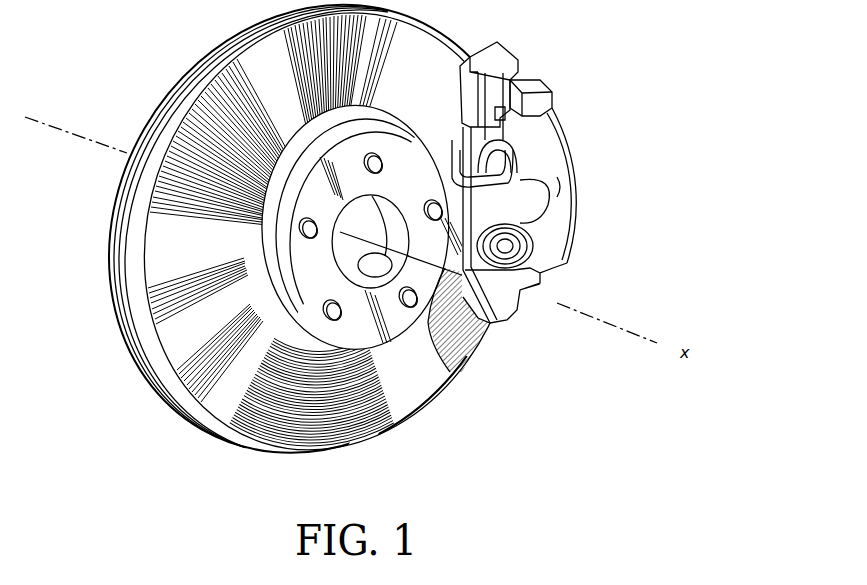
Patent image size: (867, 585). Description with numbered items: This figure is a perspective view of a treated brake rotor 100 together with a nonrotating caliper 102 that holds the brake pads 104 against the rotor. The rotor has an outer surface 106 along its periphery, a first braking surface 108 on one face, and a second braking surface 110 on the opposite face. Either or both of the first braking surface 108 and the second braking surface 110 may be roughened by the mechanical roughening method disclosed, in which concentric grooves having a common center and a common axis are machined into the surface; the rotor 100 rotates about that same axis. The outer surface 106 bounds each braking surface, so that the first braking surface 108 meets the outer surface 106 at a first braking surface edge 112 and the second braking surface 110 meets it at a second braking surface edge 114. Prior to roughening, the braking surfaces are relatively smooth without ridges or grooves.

The brake rotor 100 is at (341, 267).
The nonrotating caliper 102 is at (568, 258).
The brake pads 104 is at (472, 338).
The outer surface 106 is at (325, 267).
The first braking surface 108 is at (370, 407).
The second braking surface 110 is at (155, 390).
The first braking surface edge 112 is at (143, 283).
The second braking surface edge 114 is at (183, 62).